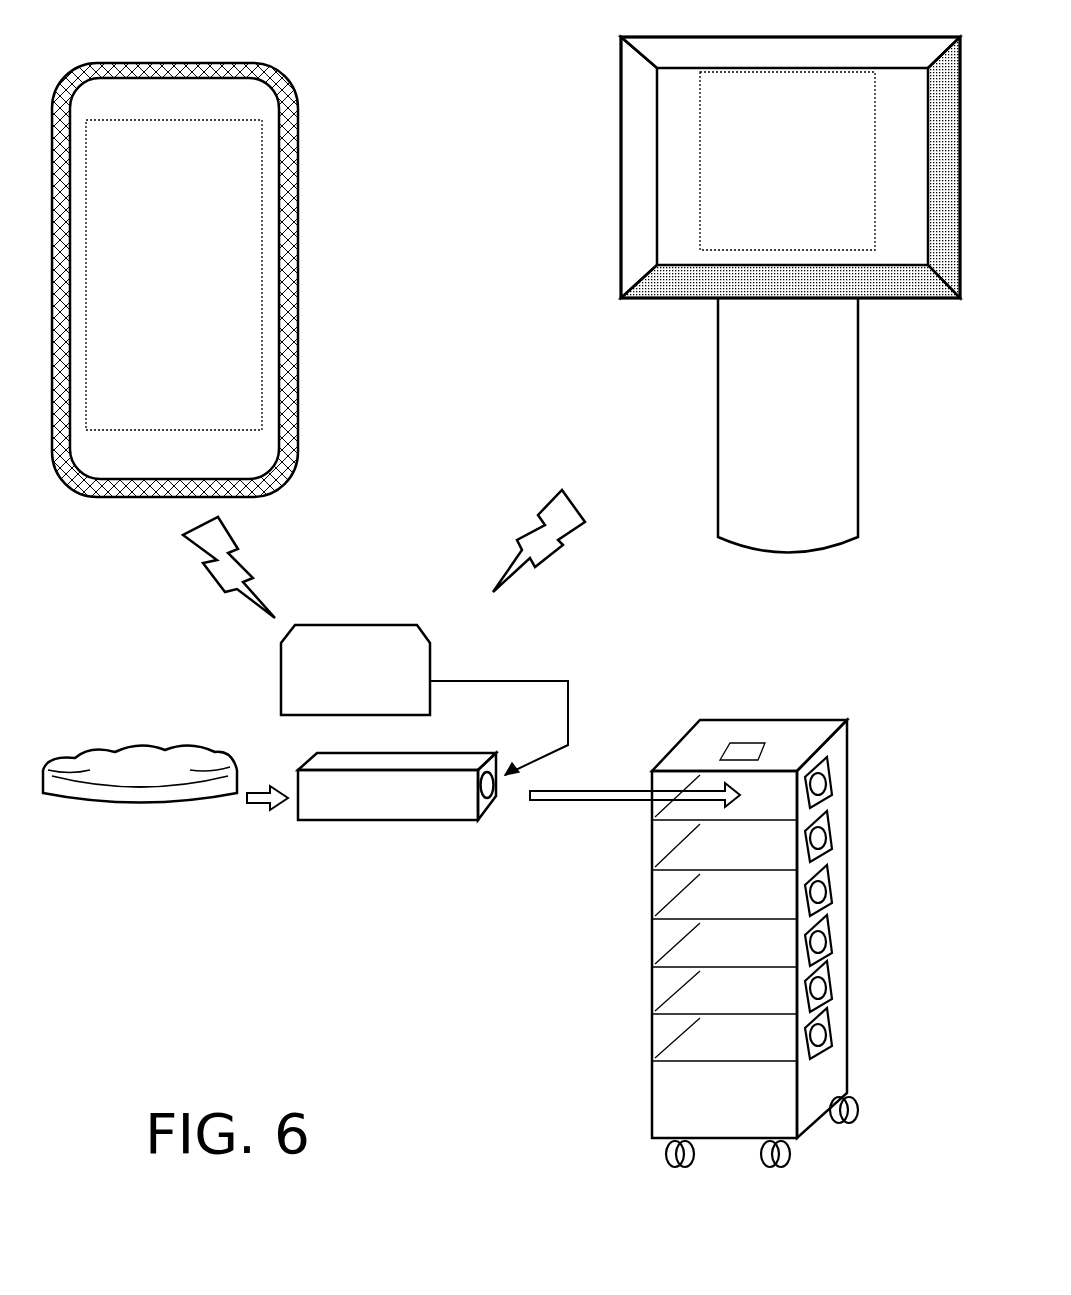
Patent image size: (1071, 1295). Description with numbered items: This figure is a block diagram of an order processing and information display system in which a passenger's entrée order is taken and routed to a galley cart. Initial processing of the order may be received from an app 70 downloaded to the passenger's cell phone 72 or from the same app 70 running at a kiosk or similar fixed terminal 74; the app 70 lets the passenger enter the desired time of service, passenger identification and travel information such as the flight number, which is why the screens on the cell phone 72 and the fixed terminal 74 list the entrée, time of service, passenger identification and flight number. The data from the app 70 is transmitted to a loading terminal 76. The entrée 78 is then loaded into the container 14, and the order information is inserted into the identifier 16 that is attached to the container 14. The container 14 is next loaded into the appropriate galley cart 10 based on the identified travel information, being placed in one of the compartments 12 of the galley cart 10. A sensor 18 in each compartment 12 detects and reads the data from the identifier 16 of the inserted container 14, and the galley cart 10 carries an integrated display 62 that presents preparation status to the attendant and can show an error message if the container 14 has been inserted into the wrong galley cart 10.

The galley cart 10 is at (792, 899).
The compartment 12 is at (775, 812).
The container 14 is at (436, 812).
The identifier 16 is at (497, 792).
The sensor 18 is at (827, 757).
The display 62 is at (747, 750).
The app 70 is at (168, 138).
The cell phone 72 is at (298, 128).
The kiosk or fixed terminal 74 is at (620, 60).
The loading terminal 76 is at (347, 625).
The entrée 78 is at (147, 767).